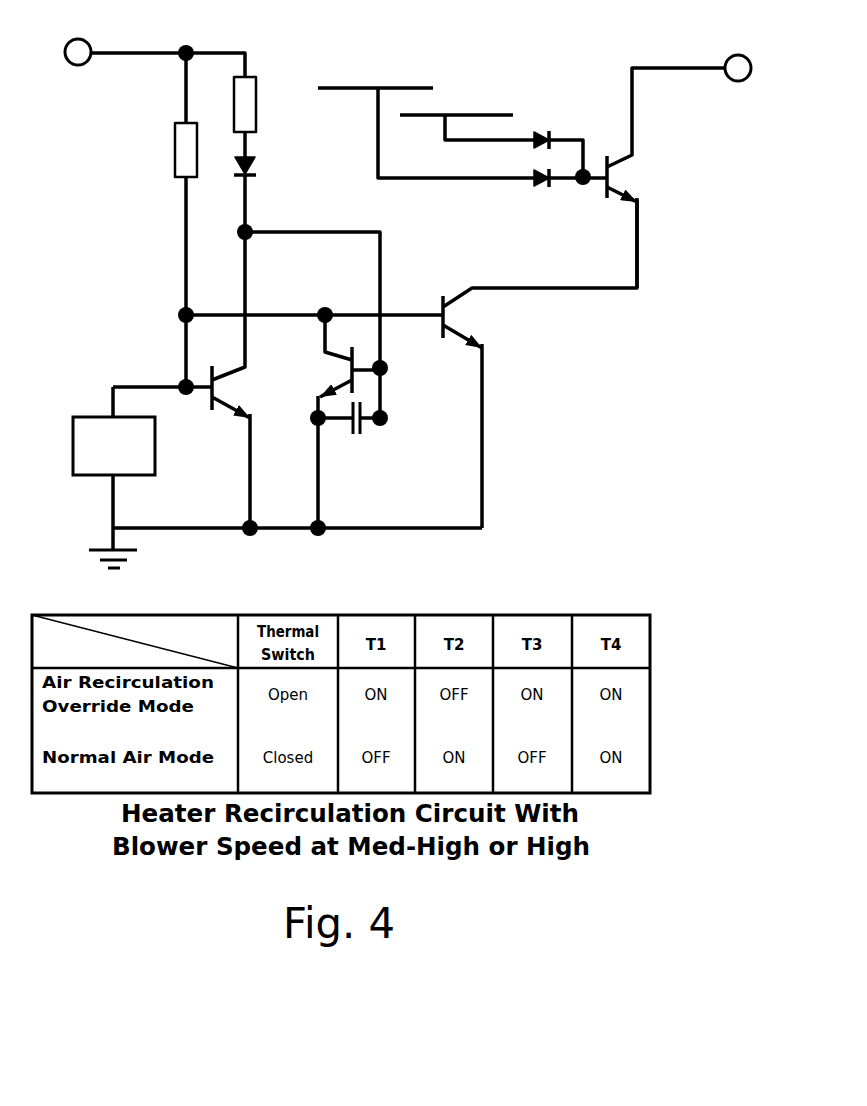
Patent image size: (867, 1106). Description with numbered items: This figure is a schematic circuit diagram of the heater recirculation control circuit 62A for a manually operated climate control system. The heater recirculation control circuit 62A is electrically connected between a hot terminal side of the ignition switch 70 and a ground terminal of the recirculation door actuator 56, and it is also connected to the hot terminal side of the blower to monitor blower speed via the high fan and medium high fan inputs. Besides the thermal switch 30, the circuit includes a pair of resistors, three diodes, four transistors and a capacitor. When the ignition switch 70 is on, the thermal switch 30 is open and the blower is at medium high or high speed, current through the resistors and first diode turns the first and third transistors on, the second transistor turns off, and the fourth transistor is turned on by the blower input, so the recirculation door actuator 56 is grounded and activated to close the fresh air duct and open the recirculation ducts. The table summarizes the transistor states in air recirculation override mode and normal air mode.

The ignition switch 70 is at (90, 44).
The recirculation door actuator 56 is at (730, 56).
The thermal switch 30 is at (155, 440).
The heater recirculation control circuit 62A is at (645, 321).